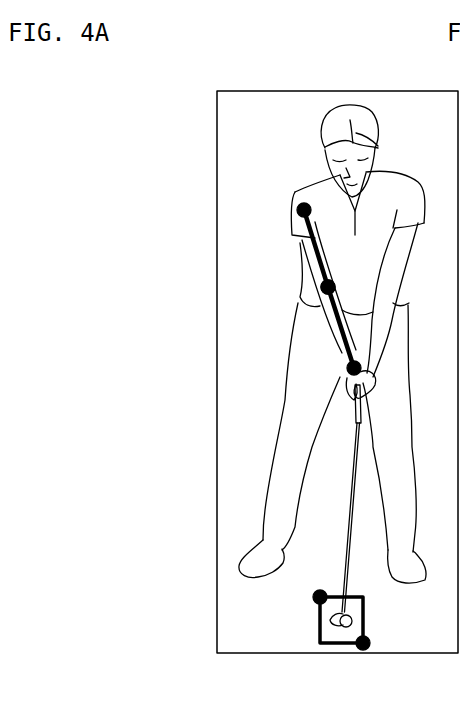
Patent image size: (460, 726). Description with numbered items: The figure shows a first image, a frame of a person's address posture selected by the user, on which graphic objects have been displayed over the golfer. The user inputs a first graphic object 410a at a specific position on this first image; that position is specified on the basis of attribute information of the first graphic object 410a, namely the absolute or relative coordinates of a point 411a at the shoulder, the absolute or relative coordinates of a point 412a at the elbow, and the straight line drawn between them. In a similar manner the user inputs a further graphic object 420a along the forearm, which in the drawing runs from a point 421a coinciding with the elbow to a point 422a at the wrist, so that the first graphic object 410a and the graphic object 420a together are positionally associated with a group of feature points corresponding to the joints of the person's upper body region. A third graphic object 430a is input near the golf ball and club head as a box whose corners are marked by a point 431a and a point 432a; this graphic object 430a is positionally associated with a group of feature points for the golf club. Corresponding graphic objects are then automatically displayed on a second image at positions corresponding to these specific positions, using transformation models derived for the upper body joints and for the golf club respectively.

The first graphic object 410a is at (295, 238).
The point 411a is at (296, 208).
The point 412a is at (320, 290).
The elbow joint point (forearm start) 421a is at (248, 299).
The graphic object 420a is at (340, 322).
The wrist joint point 422a is at (347, 372).
The graphic object 430a is at (318, 622).
The box upper-left corner point 431a is at (312, 596).
The box lower-right corner point 432a is at (348, 647).